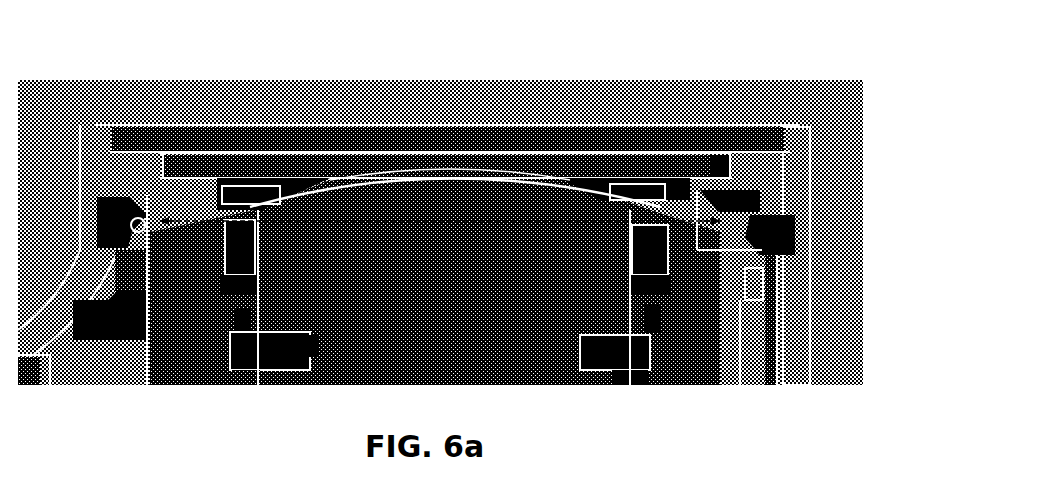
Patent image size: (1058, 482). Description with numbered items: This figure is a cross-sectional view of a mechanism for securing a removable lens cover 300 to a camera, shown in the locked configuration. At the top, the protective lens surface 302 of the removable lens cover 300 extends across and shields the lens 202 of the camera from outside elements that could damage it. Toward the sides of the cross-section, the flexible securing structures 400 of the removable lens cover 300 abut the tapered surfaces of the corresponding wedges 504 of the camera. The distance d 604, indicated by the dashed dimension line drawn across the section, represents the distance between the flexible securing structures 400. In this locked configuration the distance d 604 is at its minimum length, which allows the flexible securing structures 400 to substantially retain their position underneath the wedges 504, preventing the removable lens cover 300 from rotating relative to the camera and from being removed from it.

The removable lens cover 300 is at (477, 203).
The protective lens surface 302 is at (300, 126).
The lens 202 is at (453, 163).
The wedges 504 is at (756, 204).
The flexible securing structures 400 is at (766, 229).
The distance d 604 is at (472, 241).